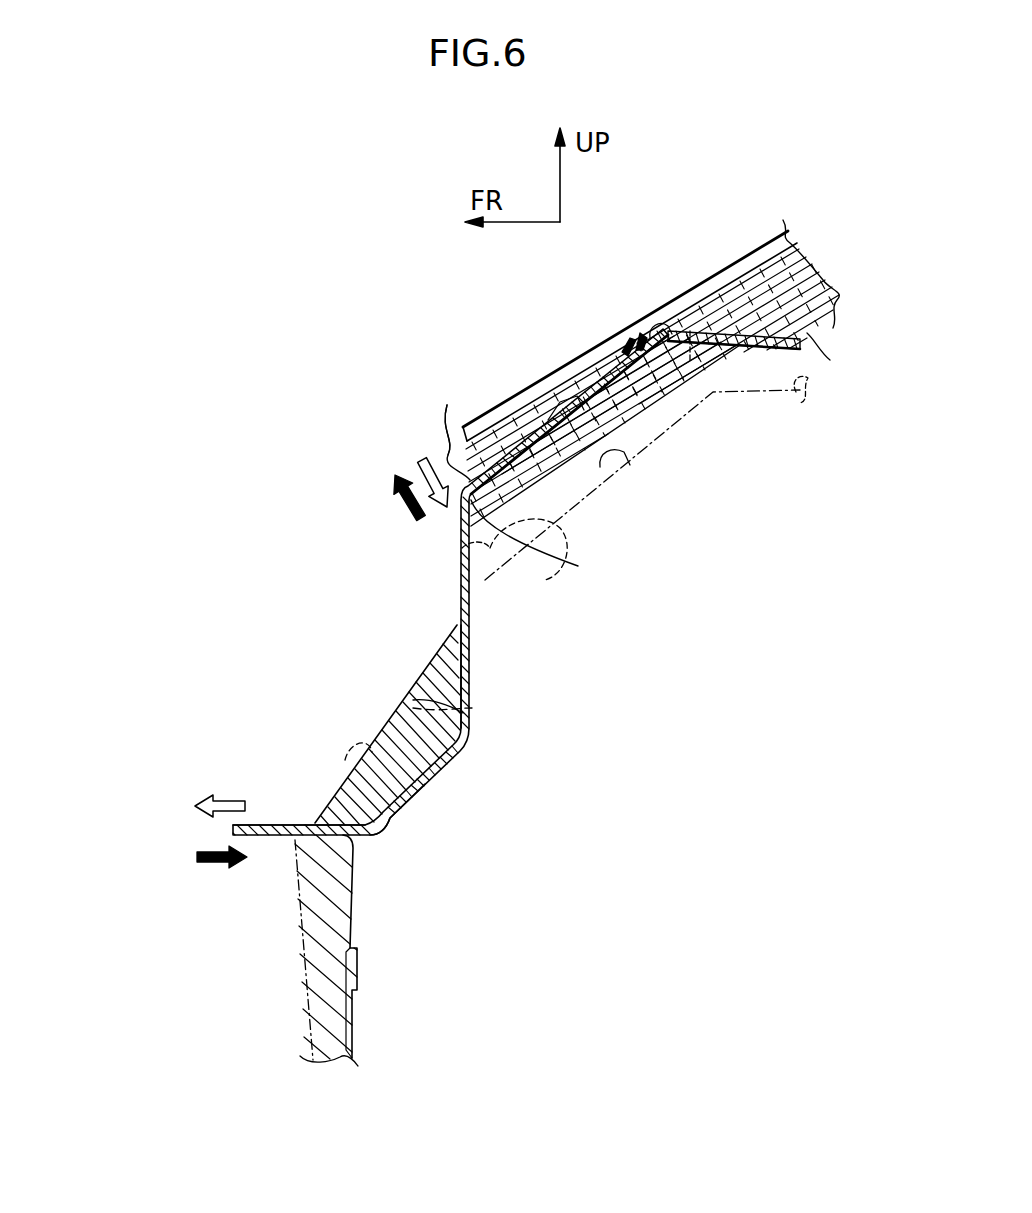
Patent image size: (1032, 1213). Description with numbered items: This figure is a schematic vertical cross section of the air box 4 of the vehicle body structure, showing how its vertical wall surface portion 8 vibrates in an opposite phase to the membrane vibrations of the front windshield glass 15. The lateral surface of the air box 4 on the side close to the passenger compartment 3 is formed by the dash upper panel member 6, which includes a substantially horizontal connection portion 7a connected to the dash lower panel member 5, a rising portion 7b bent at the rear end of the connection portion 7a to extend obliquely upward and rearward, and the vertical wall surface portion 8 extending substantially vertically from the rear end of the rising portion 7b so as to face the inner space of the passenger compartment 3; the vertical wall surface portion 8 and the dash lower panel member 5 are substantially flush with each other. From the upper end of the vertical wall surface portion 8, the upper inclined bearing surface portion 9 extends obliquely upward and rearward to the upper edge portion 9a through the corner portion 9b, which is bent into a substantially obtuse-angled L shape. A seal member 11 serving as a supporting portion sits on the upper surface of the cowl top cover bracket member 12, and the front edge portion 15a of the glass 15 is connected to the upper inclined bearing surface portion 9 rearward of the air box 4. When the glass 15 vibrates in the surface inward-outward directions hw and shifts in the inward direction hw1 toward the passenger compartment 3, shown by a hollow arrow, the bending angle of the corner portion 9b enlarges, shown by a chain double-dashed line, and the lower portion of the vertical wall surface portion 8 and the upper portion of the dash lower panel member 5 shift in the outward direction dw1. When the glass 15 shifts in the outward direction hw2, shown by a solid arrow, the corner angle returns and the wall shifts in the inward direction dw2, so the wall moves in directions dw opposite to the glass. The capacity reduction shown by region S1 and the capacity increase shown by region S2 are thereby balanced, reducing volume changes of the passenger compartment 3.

The passenger compartment 3 is at (642, 694).
The air box 4 is at (375, 686).
The dash lower panel member 5 is at (360, 995).
The dash upper panel member 6 is at (452, 585).
The connection portion 7a is at (272, 826).
The rising portion 7b is at (398, 803).
The vertical wall surface portion 8 is at (470, 700).
The upper inclined bearing surface portion 9 is at (580, 438).
The upper edge portion 9a is at (800, 333).
The corner portion 9b is at (540, 565).
The seal member 11 is at (625, 345).
The cowl top cover bracket member 12 is at (690, 360).
The front windshield glass 15 is at (690, 335).
The front edge portion 15a is at (457, 475).
The region S1 is at (772, 287).
The region S2 is at (300, 825).
The surface inward-outward directions hw is at (303, 432).
The inward direction hw1 is at (420, 460).
The outward direction hw2 is at (400, 483).
The directions dw is at (123, 780).
The outward direction dw1 is at (198, 804).
The inward direction dw2 is at (200, 855).